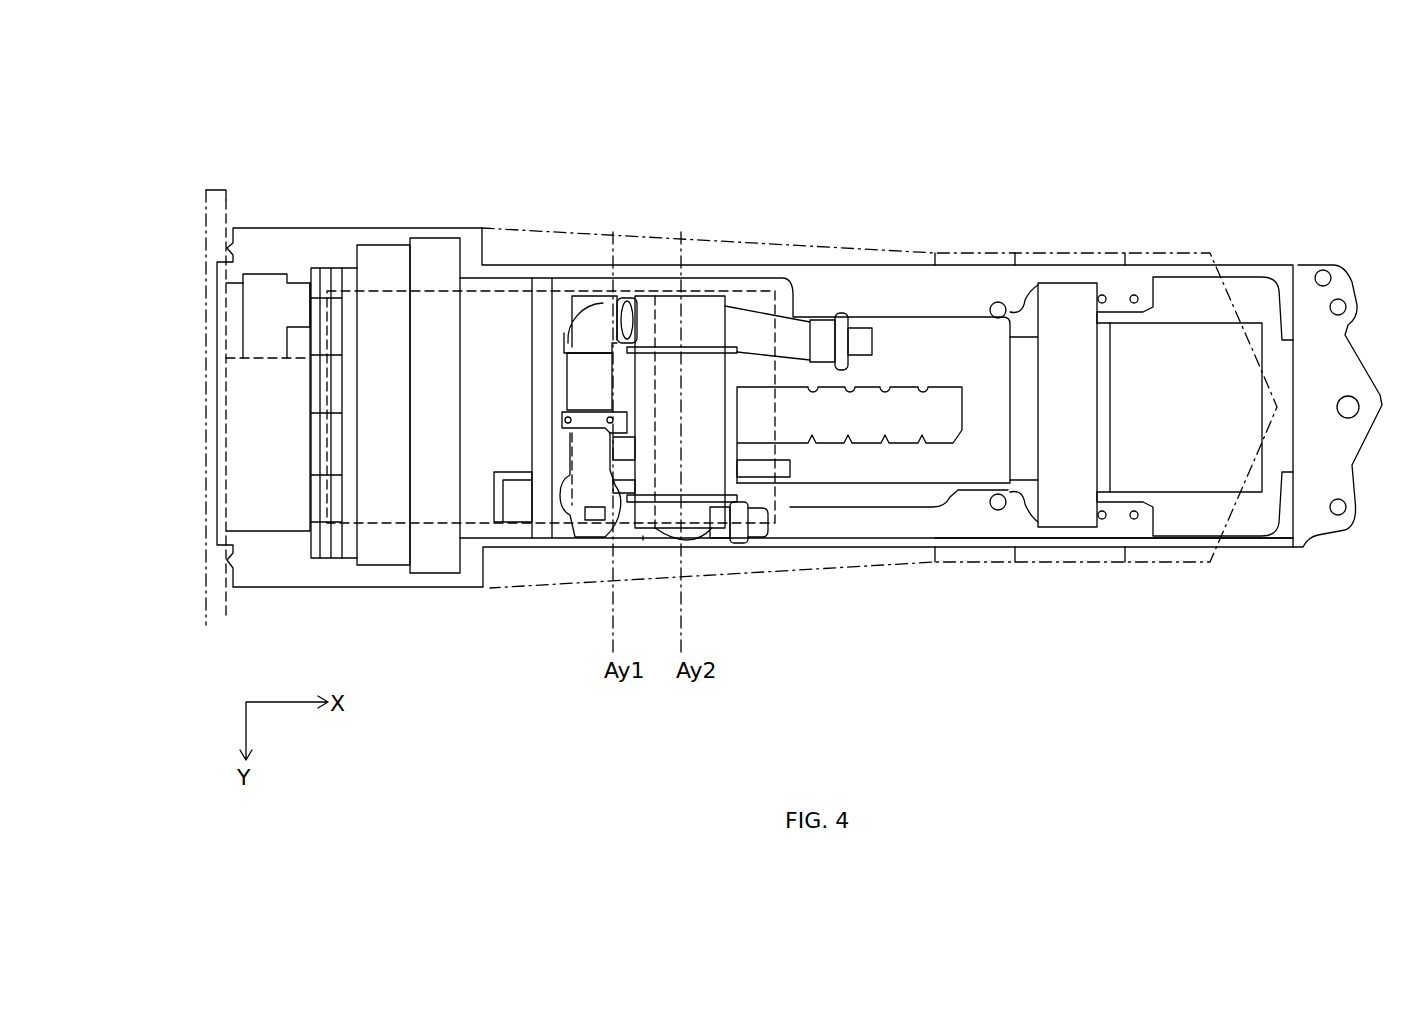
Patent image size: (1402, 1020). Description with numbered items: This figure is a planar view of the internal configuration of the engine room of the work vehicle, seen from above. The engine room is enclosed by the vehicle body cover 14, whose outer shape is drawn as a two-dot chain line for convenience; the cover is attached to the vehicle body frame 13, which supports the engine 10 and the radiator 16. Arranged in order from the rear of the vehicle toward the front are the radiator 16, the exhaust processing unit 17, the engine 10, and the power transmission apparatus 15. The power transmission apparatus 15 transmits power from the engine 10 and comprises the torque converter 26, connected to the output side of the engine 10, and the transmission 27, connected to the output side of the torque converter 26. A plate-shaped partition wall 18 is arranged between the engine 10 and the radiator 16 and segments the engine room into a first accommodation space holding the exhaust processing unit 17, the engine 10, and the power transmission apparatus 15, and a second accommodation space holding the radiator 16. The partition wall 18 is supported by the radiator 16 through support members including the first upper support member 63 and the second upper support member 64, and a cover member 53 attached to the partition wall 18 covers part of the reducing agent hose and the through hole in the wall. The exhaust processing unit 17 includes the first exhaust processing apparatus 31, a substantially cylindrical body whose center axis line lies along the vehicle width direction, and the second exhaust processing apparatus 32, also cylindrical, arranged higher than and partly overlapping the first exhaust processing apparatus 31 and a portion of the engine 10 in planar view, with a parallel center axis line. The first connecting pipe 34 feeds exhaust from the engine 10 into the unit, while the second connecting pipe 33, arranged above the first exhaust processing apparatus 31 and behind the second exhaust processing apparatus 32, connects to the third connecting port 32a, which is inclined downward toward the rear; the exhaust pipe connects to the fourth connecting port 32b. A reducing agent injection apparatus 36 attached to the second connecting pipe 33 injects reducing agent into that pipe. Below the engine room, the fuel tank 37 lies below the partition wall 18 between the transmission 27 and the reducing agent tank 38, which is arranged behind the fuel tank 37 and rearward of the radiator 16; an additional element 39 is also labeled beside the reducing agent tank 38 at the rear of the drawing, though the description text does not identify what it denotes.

The engine 10 is at (907, 332).
The vehicle body frame 13 is at (983, 527).
The vehicle body cover 14 is at (853, 578).
The power transmission apparatus 15 is at (1198, 148).
The radiator 16 is at (432, 258).
The exhaust processing unit 17 is at (648, 548).
The partition wall 18 is at (543, 535).
The torque converter 26 is at (1055, 363).
The transmission 27 is at (1202, 380).
The first exhaust processing apparatus 31 is at (627, 318).
The second exhaust processing apparatus 32 is at (708, 312).
The third connecting port 32a is at (655, 322).
The fourth connecting port 32b is at (723, 535).
The second connecting pipe 33 is at (590, 300).
The first connecting pipe 34 is at (802, 312).
The reducing agent injection apparatus 36 is at (592, 513).
The fuel tank 37 is at (432, 560).
The reducing agent tank 38 is at (260, 355).
The coupling 39 is at (278, 296).
The cover member 53 is at (513, 515).
The first upper support member 63 is at (466, 560).
The second upper support member 64 is at (472, 283).